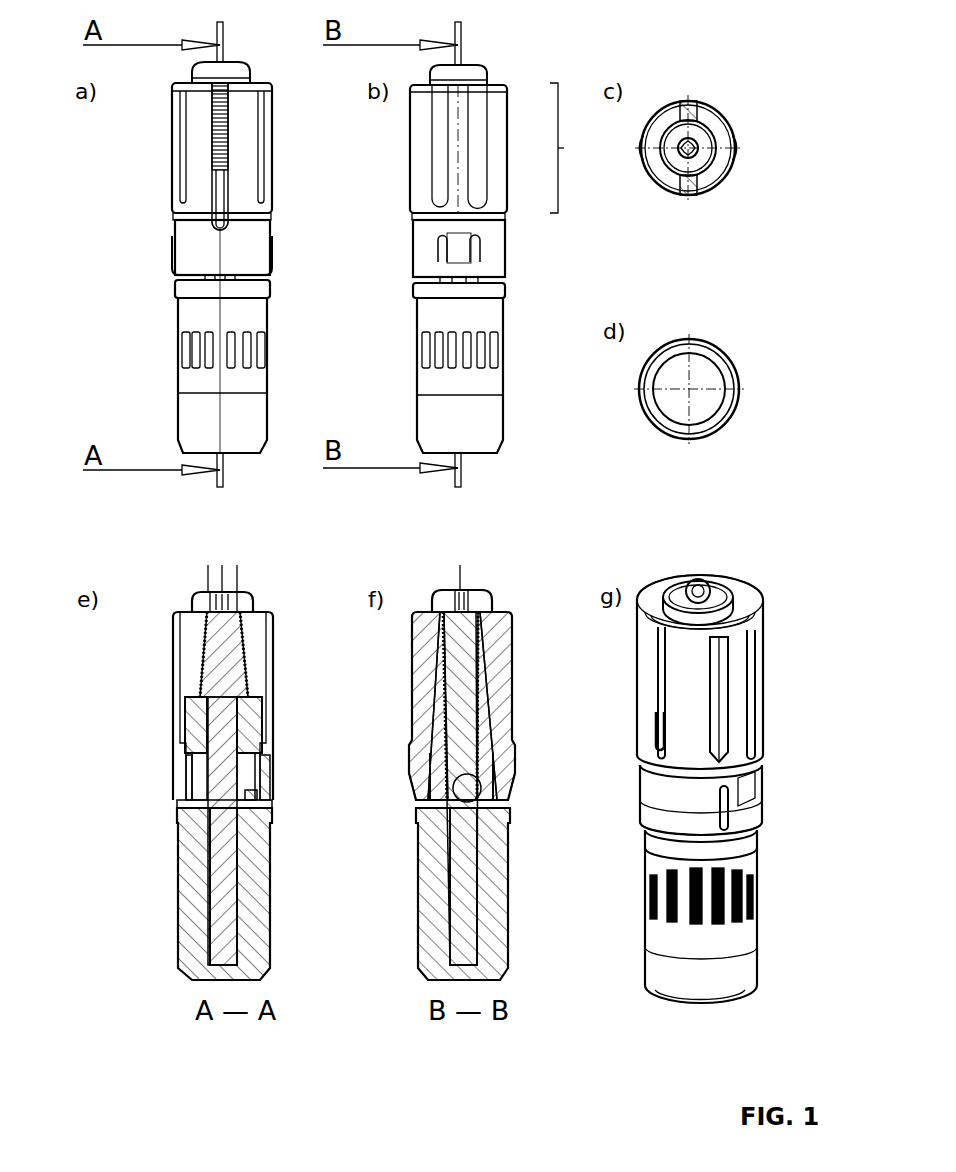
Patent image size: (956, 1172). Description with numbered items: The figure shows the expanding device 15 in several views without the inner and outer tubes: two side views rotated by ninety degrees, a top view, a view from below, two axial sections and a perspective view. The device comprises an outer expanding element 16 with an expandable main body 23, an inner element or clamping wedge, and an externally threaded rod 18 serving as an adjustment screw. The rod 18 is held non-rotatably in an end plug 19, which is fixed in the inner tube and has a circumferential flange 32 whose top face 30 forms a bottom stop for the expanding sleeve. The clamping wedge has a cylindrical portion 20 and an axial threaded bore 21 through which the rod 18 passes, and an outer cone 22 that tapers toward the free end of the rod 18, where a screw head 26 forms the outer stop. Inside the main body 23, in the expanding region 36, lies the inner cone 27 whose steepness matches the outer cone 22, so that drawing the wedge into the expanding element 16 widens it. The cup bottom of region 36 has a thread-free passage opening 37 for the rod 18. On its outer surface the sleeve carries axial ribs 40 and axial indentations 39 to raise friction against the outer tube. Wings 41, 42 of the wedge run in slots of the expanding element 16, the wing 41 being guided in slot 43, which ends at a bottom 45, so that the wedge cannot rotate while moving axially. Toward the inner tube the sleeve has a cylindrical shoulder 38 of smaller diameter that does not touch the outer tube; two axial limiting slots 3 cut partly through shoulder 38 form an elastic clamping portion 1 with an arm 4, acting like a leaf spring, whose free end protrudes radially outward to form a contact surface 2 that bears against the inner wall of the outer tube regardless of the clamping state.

The elastic clamping portion 1 is at (272, 242).
The contact surface 2 is at (272, 262).
The axial limiting slot 3 is at (438, 240).
The arm of clamping portion 4 is at (505, 765).
The expanding device 15 is at (150, 82).
The expanding element 16 is at (248, 153).
The externally threaded rod 18 is at (225, 658).
The end plug 19 is at (245, 382).
The cylindrical portion of the clamping wedge 20 is at (250, 786).
The axial threaded bore of clamping wedge 21 is at (480, 803).
The outer cone of clamping wedge 22 is at (490, 720).
The expandable main body 23 is at (205, 172).
The screw head 26 is at (232, 73).
The inner cone of the expanding sleeve 27 is at (470, 680).
The top face of the collar of the end plug 30 is at (493, 280).
The circumferential flange 32 is at (258, 290).
The expanding region 36 is at (570, 148).
The thread-free passage opening 37 is at (240, 620).
The cylindrical shoulder 38 is at (240, 228).
The axial indentation 39 is at (262, 125).
The axial rib 40 is at (272, 98).
The wing 41 is at (228, 185).
The wing in continuous slot 42 is at (688, 196).
The slot 43 is at (658, 685).
The bottom of slot 45 is at (215, 228).